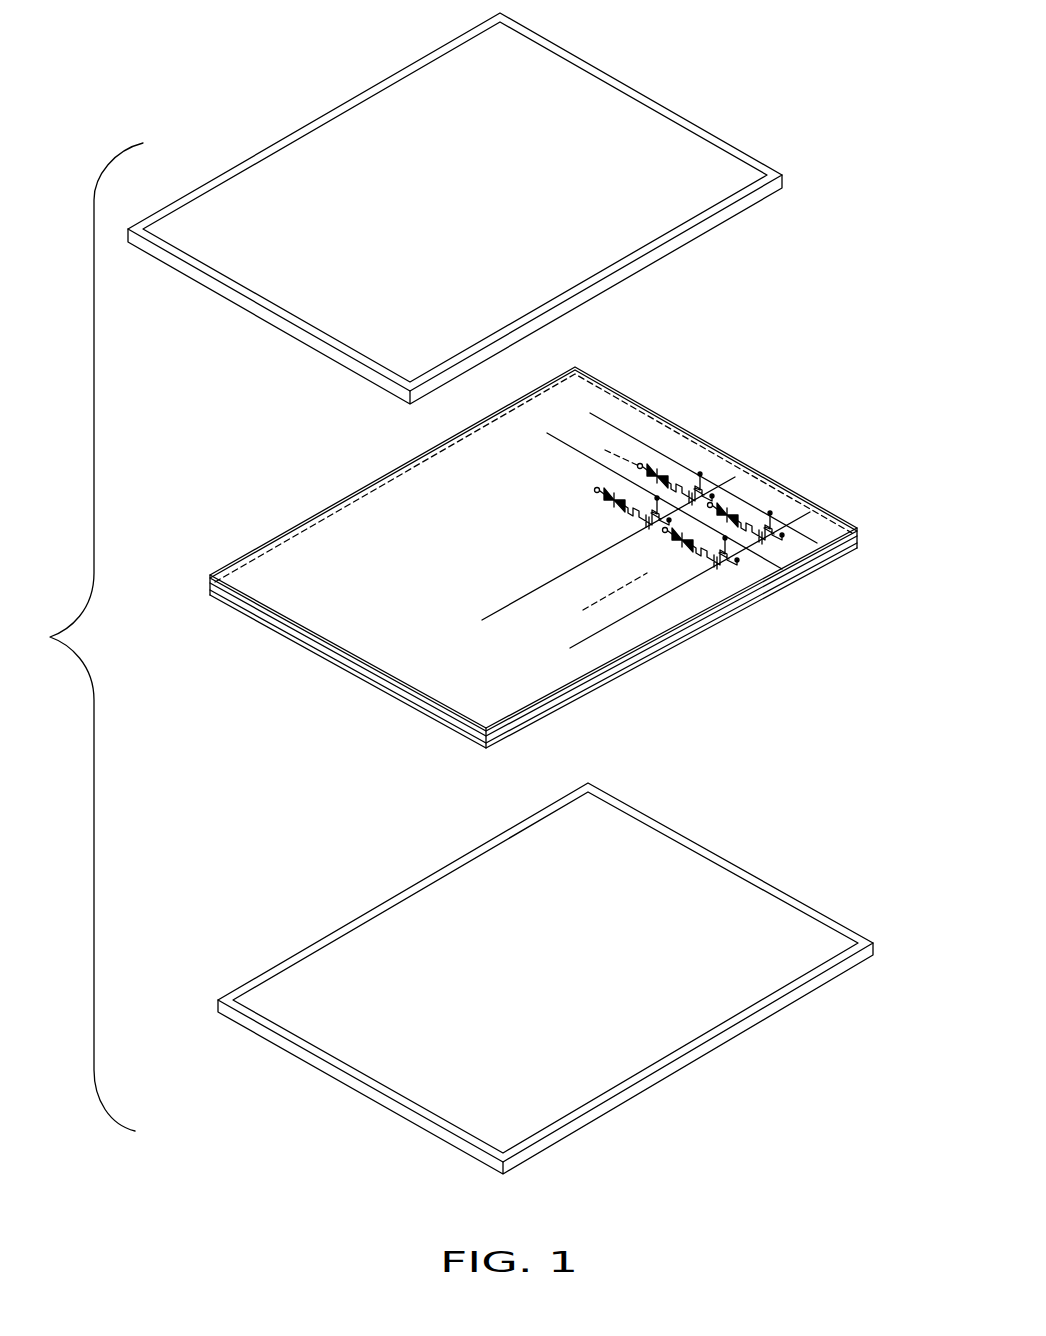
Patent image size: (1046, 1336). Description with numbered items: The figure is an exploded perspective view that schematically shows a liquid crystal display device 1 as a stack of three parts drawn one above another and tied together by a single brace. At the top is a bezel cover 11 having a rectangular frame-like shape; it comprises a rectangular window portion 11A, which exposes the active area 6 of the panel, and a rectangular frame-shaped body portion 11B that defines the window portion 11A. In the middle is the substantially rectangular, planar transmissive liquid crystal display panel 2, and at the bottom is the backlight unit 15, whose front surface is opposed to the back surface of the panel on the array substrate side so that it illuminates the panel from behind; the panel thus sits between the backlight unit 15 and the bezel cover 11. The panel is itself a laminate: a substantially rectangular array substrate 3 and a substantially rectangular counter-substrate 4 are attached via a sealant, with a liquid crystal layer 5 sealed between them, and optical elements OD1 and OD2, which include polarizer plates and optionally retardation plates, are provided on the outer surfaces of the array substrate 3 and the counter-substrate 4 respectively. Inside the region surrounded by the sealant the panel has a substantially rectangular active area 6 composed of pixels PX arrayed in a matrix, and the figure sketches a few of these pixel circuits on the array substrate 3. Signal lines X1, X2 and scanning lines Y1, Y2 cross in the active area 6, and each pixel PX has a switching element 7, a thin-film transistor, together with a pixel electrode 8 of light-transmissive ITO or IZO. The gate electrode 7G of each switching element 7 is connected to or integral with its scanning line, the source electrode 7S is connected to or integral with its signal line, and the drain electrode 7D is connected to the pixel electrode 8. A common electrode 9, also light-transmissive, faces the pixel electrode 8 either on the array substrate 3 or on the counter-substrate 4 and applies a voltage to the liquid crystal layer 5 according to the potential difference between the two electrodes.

The liquid crystal display device 1 is at (86, 637).
The liquid crystal display panel 2 is at (686, 423).
The array substrate 3 is at (857, 528).
The counter-substrate 4 is at (793, 460).
The liquid crystal layer 5 is at (673, 549).
The active area 6 is at (610, 415).
The switching element 7 is at (713, 565).
The source electrode 7S is at (777, 527).
The gate electrode 7G is at (793, 528).
The drain electrode 7D is at (760, 540).
The pixel electrode 8 is at (690, 557).
The common electrode 9 is at (662, 533).
The pixel PX is at (724, 537).
The signal line X1 is at (590, 413).
The signal line X2 is at (580, 453).
The scanning line Y1 is at (570, 648).
The scanning line Y2 is at (483, 620).
The optical element OD1 is at (247, 613).
The optical element OD2 is at (247, 568).
The bezel cover 11 is at (681, 97).
The window portion 11A is at (538, 105).
The body portion 11B is at (762, 202).
The backlight unit 15 is at (770, 868).